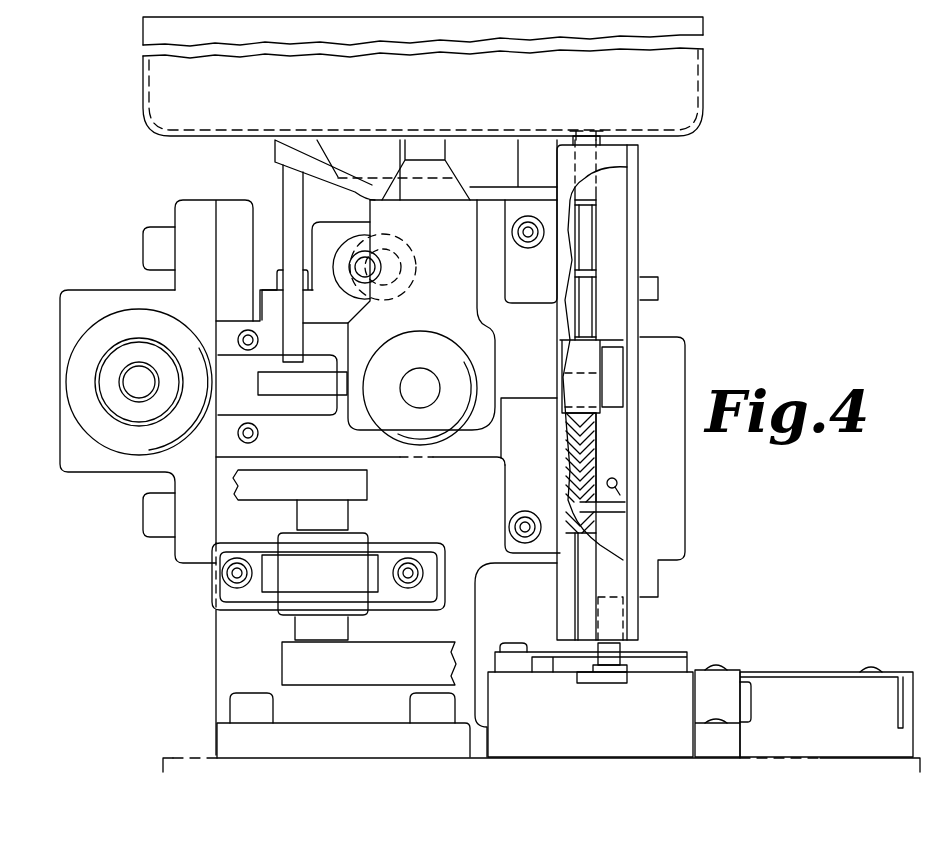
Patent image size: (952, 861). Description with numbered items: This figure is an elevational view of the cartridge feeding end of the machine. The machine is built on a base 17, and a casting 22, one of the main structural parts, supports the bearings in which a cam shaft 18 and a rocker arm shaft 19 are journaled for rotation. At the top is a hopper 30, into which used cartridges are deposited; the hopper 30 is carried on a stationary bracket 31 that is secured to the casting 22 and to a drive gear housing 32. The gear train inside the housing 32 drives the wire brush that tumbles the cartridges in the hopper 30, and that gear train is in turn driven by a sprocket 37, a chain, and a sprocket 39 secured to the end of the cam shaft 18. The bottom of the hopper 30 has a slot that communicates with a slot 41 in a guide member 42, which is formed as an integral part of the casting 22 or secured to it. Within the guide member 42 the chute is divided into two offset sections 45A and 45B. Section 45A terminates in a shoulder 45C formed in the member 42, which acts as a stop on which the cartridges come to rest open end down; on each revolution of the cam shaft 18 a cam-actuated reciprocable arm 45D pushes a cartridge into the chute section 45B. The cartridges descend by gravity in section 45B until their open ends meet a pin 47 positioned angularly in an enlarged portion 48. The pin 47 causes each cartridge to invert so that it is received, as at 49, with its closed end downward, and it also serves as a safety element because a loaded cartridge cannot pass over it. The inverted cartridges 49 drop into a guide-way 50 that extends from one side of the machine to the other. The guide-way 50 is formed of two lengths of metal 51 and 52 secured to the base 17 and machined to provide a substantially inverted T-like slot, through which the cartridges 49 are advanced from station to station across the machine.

The base 17 is at (573, 760).
The cam shaft 18 is at (365, 258).
The rocker arm shaft 19 is at (432, 368).
The casting 22 is at (228, 738).
The hopper 30 is at (143, 80).
The stationary bracket 31 is at (337, 162).
The drive gear housing 32 is at (478, 265).
The sprocket 37 is at (444, 460).
The sprocket 39 is at (350, 294).
The slot 41 is at (572, 128).
The guide member 42 is at (620, 158).
The chute section 45A is at (598, 279).
The chute section 45B is at (628, 415).
The shoulder 45C is at (566, 447).
The reciprocable arm 45D is at (575, 385).
The pin 47 is at (621, 490).
The enlarged portion 48 is at (612, 456).
The cartridges 49 is at (637, 642).
The guide-way 50 is at (623, 662).
The length of metal 51 is at (648, 670).
The length of metal 52 is at (558, 678).